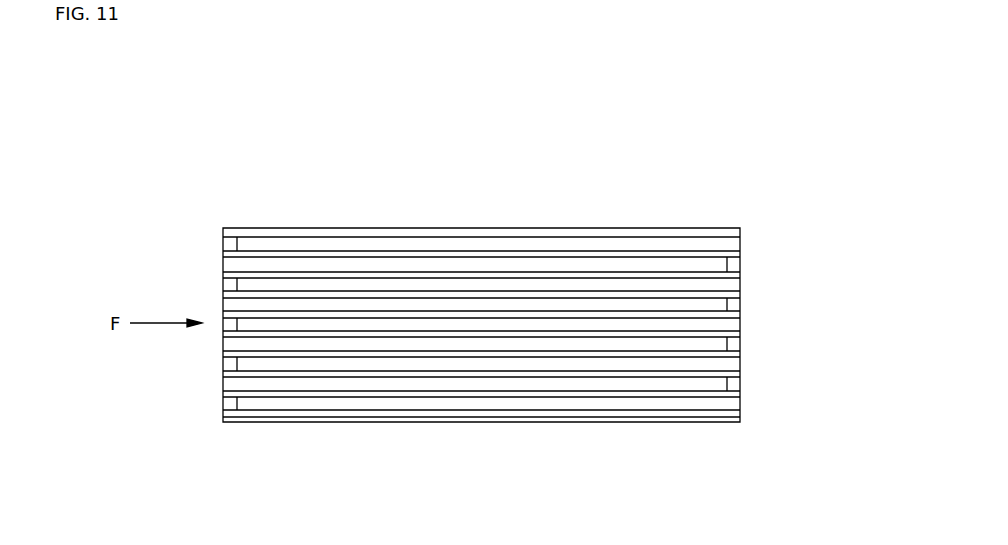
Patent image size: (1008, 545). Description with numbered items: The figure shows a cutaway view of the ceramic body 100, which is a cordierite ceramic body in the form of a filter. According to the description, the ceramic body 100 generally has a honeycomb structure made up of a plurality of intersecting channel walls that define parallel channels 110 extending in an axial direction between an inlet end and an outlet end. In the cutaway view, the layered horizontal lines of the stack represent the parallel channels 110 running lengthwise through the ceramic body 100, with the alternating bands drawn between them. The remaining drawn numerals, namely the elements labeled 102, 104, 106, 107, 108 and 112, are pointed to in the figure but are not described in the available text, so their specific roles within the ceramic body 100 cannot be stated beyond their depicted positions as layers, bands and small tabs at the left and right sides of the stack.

The ceramic body 100 is at (700, 172).
The first outer layer 102 is at (222, 253).
The second outer layer 104 is at (740, 405).
The separator 106 is at (444, 295).
The separator fold 107 is at (597, 270).
The first electrode 108 is at (415, 305).
The parallel channels 110 is at (305, 323).
The electrode tab 112 is at (222, 325).